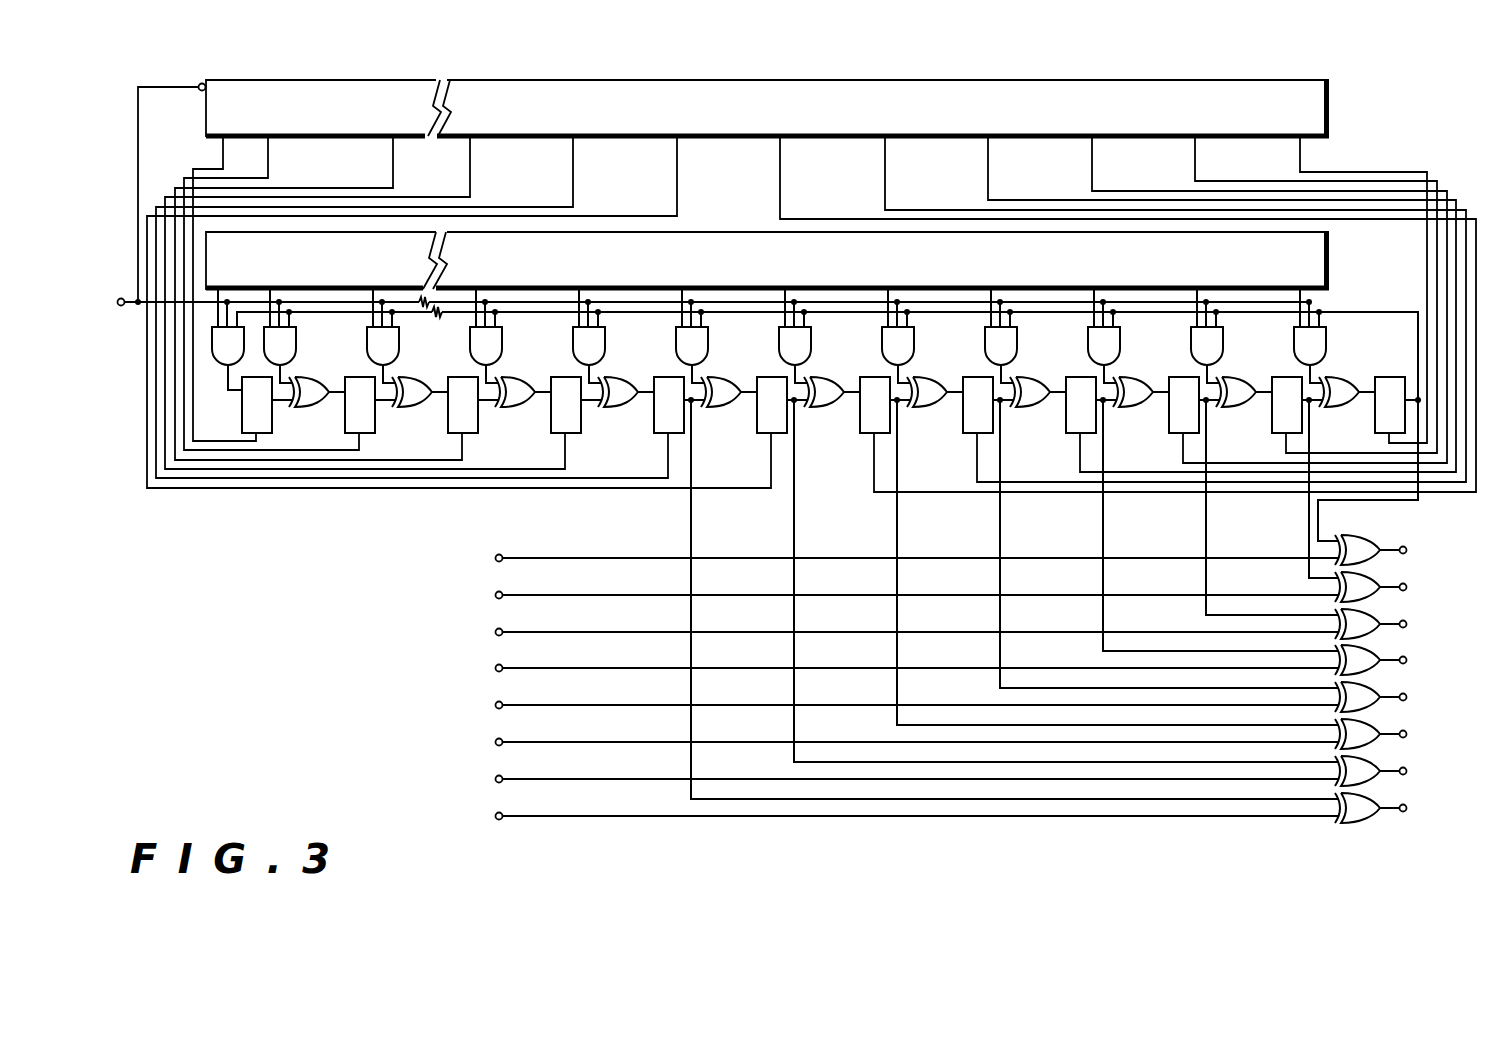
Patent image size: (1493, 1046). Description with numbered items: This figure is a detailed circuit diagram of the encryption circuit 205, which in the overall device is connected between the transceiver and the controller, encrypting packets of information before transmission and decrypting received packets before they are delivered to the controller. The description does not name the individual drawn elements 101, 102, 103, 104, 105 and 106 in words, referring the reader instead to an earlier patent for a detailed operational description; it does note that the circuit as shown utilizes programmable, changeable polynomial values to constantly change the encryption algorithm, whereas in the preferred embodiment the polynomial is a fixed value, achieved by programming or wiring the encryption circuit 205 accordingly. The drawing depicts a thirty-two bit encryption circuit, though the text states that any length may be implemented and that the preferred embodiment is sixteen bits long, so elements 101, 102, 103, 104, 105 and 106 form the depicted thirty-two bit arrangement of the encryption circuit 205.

The key register 101 is at (1330, 103).
The polynomial register 102 is at (722, 230).
The linear feedback shift register stage array 103 is at (782, 518).
The flip-flop register stage 104 is at (357, 377).
The output exclusive-OR gate bank 105 is at (1444, 512).
The exclusive-OR gate 106 is at (302, 407).
The encryption circuit 205 is at (793, 456).